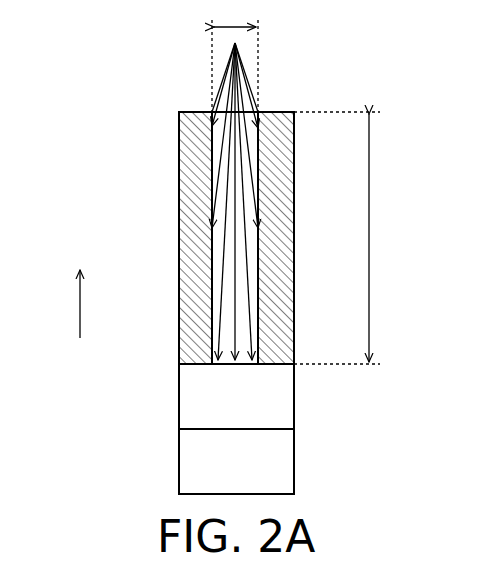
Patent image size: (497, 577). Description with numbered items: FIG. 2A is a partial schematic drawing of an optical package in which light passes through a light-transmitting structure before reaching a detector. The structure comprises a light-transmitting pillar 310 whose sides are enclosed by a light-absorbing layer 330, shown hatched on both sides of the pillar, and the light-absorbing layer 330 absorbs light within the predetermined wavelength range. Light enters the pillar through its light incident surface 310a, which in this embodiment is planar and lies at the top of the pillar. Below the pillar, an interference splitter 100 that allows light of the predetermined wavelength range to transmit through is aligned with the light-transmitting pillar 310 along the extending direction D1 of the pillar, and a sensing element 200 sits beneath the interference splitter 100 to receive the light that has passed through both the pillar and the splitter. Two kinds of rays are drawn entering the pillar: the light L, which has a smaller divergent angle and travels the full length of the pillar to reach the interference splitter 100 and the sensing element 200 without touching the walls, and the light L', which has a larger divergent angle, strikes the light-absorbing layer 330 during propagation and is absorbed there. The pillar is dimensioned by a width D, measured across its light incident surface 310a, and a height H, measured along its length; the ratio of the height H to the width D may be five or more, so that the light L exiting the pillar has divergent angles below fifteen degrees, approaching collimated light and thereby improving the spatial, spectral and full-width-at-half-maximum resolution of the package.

The light-transmitting pillar 310 is at (182, 127).
The light incident surface 310a is at (258, 110).
The light-absorbing layer 330 is at (295, 231).
The interference splitter 100 is at (294, 394).
The sensing element 200 is at (294, 456).
The light L is at (270, 201).
The light L' is at (268, 135).
The width D is at (235, 56).
The extending direction D1 is at (65, 304).
The height H is at (343, 238).